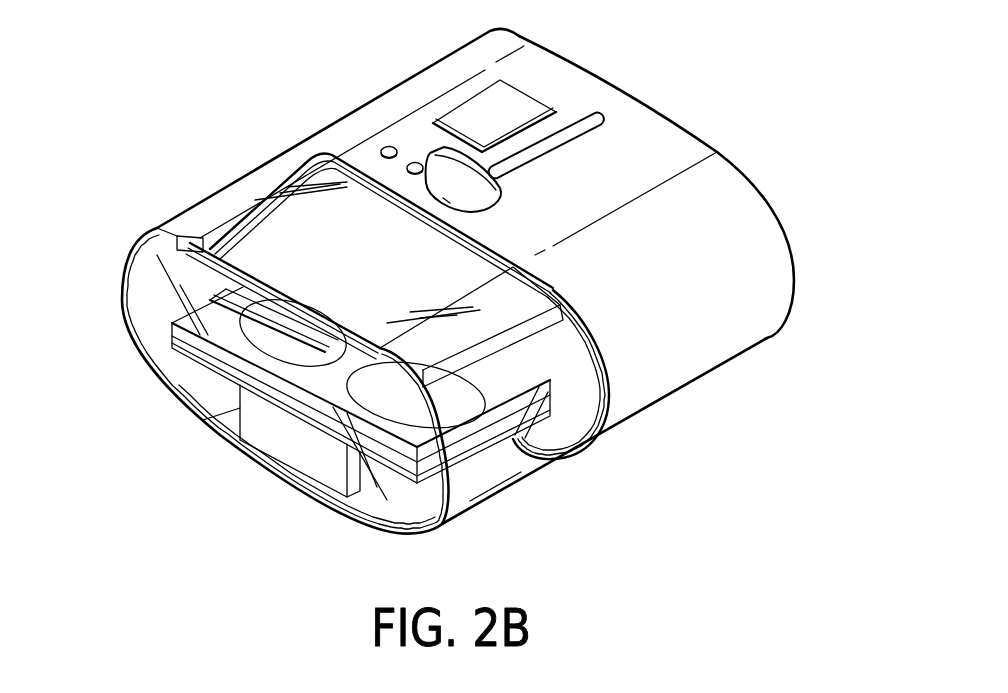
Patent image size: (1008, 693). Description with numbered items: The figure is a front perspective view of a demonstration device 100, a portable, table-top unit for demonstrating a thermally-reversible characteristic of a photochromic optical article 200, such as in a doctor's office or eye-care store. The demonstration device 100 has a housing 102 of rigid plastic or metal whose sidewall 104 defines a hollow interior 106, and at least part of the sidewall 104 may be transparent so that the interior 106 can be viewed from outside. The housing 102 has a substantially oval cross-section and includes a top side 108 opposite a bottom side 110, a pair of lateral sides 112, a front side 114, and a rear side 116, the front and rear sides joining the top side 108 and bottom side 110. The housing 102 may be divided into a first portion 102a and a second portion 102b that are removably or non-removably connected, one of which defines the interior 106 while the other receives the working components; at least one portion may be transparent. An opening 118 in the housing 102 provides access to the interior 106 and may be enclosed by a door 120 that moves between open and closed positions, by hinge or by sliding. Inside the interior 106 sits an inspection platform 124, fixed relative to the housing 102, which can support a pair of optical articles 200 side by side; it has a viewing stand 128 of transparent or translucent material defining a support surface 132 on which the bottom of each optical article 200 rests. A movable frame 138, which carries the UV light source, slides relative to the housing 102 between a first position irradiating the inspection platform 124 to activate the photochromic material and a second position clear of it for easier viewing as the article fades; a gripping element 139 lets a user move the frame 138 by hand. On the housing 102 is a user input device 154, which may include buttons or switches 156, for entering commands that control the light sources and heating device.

The demonstration device 100 is at (800, 122).
The housing 102 is at (777, 229).
The first portion 102a is at (521, 472).
The second portion 102b is at (678, 356).
The sidewall 104 is at (392, 534).
The interior 106 is at (196, 377).
The top side 108 is at (670, 137).
The bottom side 110 is at (247, 457).
The lateral sides 112 is at (446, 80).
The front side 114 is at (143, 337).
The rear side 116 is at (552, 50).
The opening 118 is at (223, 228).
The door 120 is at (263, 242).
The inspection platform 124 is at (305, 458).
The viewing stand 128 is at (223, 325).
The support surface 132 is at (316, 378).
The movable frame 138 is at (530, 297).
The gripping element 139 is at (492, 181).
The user input device 154 is at (508, 107).
The buttons or switches 156 is at (418, 163).
The optical article 200 is at (280, 336).